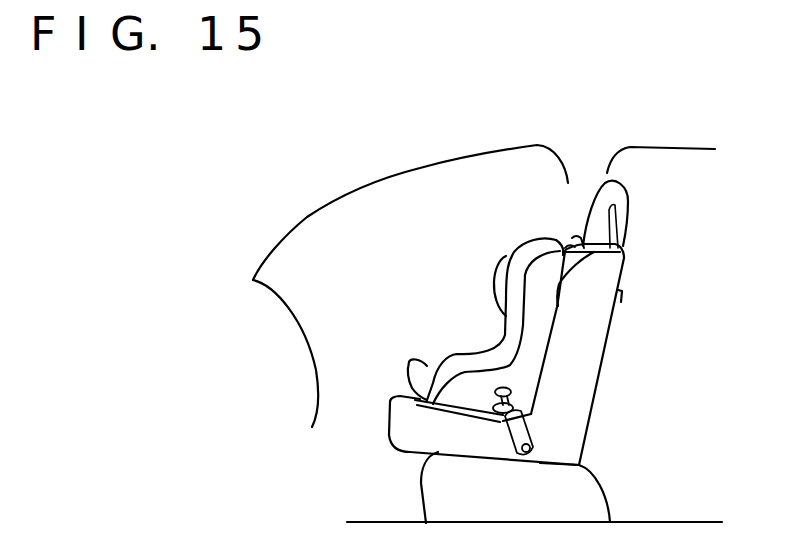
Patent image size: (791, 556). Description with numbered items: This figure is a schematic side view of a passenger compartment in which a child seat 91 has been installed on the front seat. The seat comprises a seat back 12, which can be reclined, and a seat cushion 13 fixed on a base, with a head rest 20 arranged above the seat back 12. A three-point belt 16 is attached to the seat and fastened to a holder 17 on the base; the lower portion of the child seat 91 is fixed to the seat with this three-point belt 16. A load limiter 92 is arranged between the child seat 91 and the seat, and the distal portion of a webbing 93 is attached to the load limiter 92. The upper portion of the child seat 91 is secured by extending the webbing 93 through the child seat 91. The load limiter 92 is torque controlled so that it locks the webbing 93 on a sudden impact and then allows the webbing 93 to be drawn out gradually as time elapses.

The seat back 12 is at (590, 370).
The seat cushion 13 is at (406, 432).
The three-point belt 16 is at (489, 413).
The holder 17 is at (512, 440).
The head rest 20 is at (602, 197).
The child seat 91 is at (508, 318).
The load limiter 92 is at (572, 236).
The webbing 93 is at (567, 240).